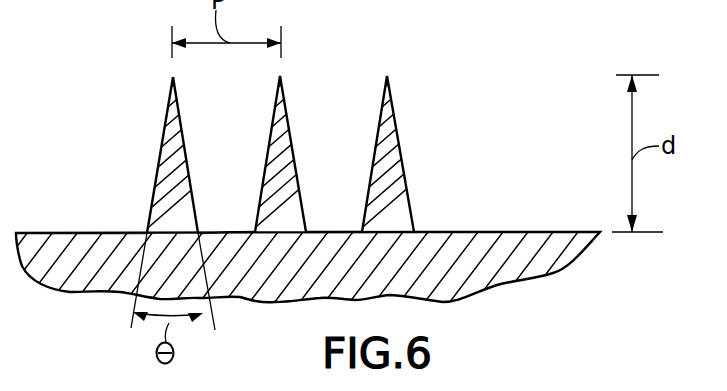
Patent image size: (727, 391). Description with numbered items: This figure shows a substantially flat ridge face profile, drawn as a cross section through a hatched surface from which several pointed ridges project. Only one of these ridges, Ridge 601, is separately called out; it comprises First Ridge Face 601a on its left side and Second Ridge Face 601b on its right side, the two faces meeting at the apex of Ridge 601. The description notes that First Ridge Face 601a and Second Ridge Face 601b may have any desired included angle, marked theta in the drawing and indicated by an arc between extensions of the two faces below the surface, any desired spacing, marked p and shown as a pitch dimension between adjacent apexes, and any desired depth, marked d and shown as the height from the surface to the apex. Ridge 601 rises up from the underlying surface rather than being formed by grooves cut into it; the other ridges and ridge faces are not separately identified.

The ridge 601 is at (177, 118).
The first ridge face 601a is at (160, 147).
The second ridge face 601b is at (181, 118).